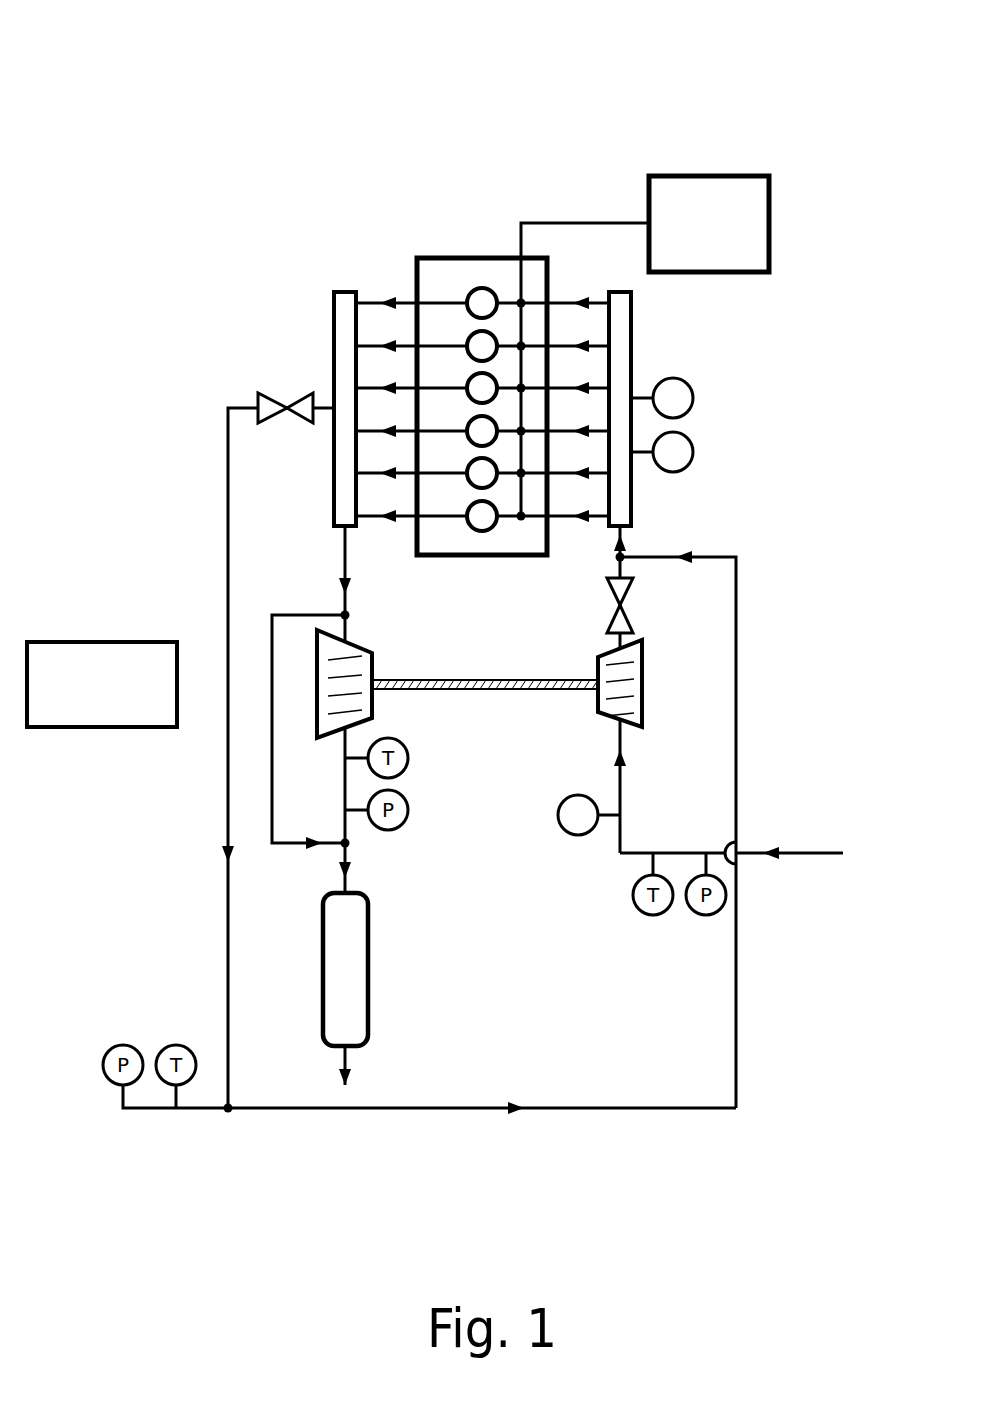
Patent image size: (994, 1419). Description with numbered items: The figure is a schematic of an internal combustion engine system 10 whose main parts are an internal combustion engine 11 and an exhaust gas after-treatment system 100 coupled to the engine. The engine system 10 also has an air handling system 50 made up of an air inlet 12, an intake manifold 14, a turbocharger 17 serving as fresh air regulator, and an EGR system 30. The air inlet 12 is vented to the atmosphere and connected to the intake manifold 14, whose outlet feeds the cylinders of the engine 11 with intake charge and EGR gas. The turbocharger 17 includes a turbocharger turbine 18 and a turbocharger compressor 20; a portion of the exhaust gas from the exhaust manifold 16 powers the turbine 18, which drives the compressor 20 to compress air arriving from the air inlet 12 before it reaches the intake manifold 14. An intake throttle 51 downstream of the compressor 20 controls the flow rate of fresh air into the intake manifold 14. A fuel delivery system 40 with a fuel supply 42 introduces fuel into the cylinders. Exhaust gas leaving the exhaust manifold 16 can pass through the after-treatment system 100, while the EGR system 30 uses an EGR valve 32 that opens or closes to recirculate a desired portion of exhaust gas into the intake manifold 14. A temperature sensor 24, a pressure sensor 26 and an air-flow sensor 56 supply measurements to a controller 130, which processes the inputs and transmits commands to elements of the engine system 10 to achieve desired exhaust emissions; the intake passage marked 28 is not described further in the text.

The internal combustion engine system 10 is at (105, 110).
The internal combustion engine 11 is at (481, 258).
The air inlet 12 is at (826, 855).
The intake manifold 14 is at (631, 320).
The exhaust manifold 16 is at (334, 318).
The turbocharger 17 is at (479, 719).
The turbocharger turbine 18 is at (372, 653).
The turbocharger compressor 20 is at (598, 656).
The temperature sensor 24 is at (693, 400).
The pressure sensor 26 is at (693, 454).
The intake passage 28 is at (810, 935).
The EGR system 30 is at (206, 375).
The EGR valve 32 is at (258, 396).
The fuel delivery system 40 is at (597, 185).
The fuel supply 42 is at (710, 176).
The air handling system 50 is at (715, 343).
The intake throttle 51 is at (628, 618).
The air-flow sensor 56 is at (578, 835).
The exhaust gas after-treatment system 100 is at (368, 972).
The controller 130 is at (102, 684).